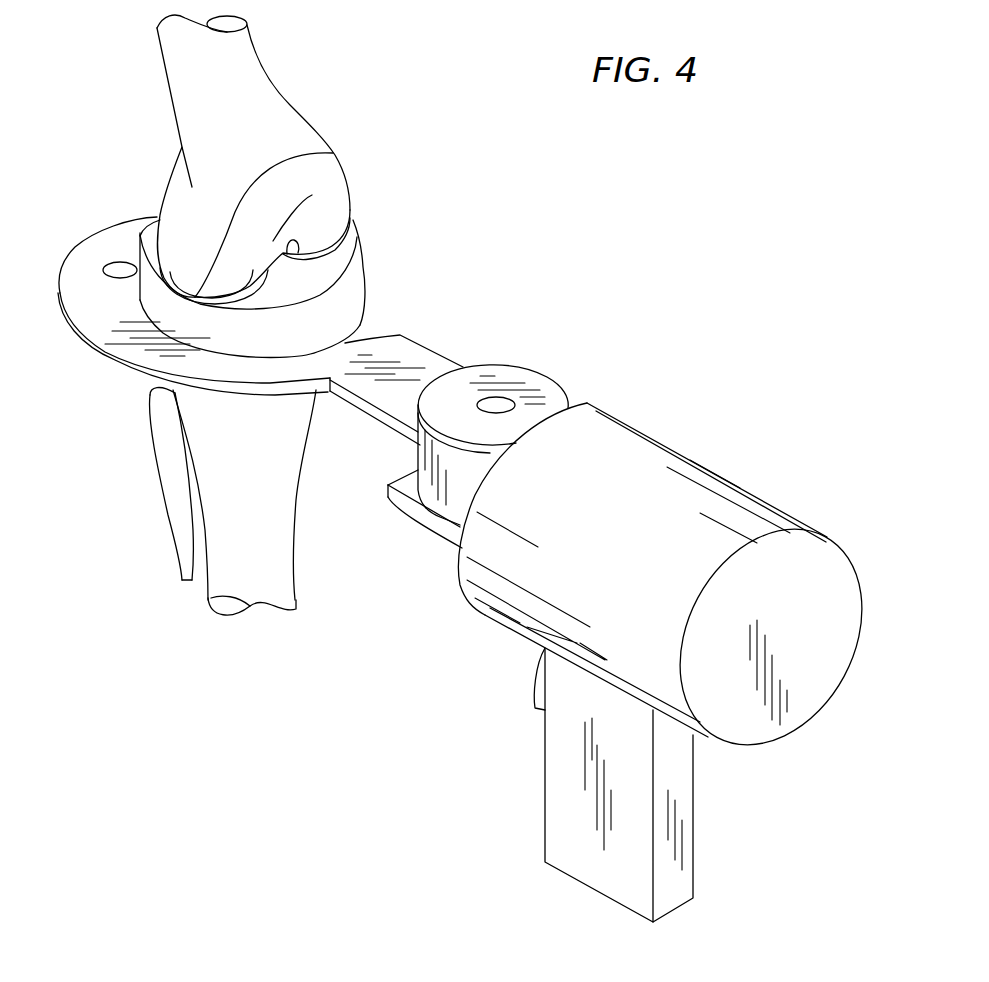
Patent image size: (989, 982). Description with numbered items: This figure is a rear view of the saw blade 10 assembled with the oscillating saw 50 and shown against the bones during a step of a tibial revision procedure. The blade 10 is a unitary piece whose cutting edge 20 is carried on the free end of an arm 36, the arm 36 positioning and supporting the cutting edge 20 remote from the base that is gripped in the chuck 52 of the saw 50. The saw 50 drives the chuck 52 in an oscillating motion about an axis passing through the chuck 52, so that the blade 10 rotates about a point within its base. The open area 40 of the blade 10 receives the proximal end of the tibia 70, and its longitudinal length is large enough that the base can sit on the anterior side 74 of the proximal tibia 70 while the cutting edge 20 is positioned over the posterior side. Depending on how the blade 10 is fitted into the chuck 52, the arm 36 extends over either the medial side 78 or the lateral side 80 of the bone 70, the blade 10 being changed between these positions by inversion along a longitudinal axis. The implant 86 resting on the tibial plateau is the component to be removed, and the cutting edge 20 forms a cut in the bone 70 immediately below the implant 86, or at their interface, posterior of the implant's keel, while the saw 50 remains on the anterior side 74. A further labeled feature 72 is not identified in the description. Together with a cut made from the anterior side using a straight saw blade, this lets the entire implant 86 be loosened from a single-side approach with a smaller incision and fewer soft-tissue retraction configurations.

The saw blade 10 is at (232, 289).
The cutting edge 20 is at (236, 283).
The arm 36 is at (77, 305).
The open area 40 is at (123, 288).
The saw 50 is at (725, 428).
The chuck 52 is at (530, 379).
The tibia 70 is at (456, 410).
The extension arm 72 is at (356, 338).
The anterior side 74 is at (372, 180).
The medial side 78 is at (293, 281).
The lateral side 80 is at (193, 408).
The implant 86 is at (365, 284).